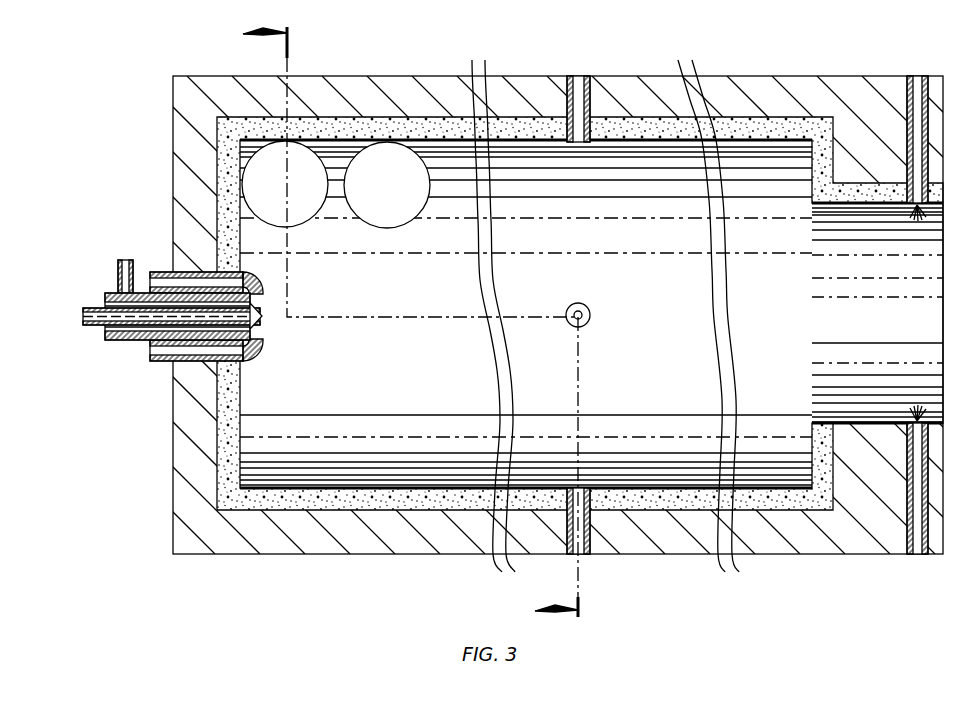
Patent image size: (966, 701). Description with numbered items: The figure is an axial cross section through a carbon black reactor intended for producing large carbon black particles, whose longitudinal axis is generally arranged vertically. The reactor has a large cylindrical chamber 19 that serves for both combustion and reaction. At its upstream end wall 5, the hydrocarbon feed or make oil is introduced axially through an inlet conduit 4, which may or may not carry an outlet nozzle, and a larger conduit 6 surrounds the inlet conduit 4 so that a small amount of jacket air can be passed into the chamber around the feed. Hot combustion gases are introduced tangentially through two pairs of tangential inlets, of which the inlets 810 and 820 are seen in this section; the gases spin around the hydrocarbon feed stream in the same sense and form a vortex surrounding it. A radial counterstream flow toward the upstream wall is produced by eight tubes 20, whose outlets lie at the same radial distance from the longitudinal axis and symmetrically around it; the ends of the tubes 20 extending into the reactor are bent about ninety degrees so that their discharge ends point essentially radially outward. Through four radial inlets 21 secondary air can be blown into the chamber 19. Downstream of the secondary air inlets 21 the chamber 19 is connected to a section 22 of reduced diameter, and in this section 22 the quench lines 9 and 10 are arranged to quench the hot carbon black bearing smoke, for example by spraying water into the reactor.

The inlet conduit 4 is at (278, 331).
The upstream end wall 5 is at (243, 248).
The larger conduit 6 is at (108, 343).
The quench line 9 is at (929, 85).
The quench line 10 is at (918, 556).
The cylindrical chamber 19 is at (656, 321).
The tubes 20 is at (258, 275).
The radial inlets 21 is at (585, 143).
The section with reduced diameter 22 is at (842, 323).
The tangential inlet 810 is at (295, 225).
The tangential inlet 820 is at (390, 228).